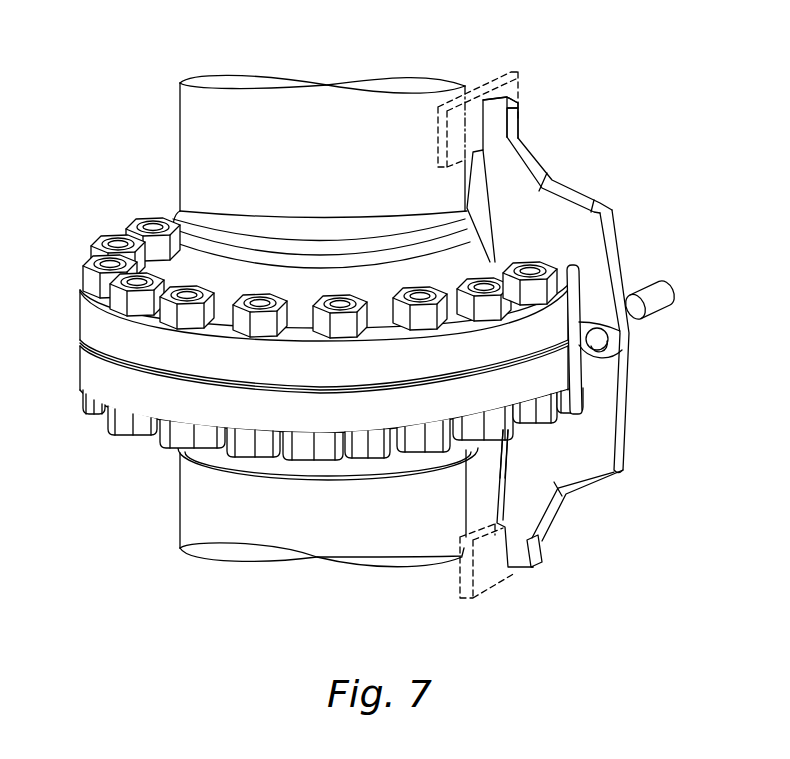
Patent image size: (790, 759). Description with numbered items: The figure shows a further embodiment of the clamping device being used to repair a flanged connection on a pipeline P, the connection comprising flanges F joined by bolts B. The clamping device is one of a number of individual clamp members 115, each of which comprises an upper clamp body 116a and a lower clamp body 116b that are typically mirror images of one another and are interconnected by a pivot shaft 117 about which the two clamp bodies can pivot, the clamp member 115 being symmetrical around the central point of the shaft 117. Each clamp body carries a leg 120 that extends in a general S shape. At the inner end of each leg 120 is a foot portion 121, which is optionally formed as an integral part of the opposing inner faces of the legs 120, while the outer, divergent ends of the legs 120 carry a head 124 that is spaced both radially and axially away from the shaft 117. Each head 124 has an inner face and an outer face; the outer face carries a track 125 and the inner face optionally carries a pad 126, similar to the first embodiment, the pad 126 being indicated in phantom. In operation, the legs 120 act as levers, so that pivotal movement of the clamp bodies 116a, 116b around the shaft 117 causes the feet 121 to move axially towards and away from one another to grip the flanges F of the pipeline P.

The pipeline P is at (177, 148).
The flanges F is at (90, 373).
The bolts B is at (132, 437).
The clamp member 115 is at (560, 342).
The upper clamp body 116a is at (625, 265).
The lower clamp body 116b is at (631, 397).
The pivot shaft 117 is at (668, 292).
The leg 120 is at (547, 217).
The foot portion 121 is at (498, 477).
The head 124 is at (468, 80).
The track 125 is at (519, 121).
The pad 126 is at (437, 133).